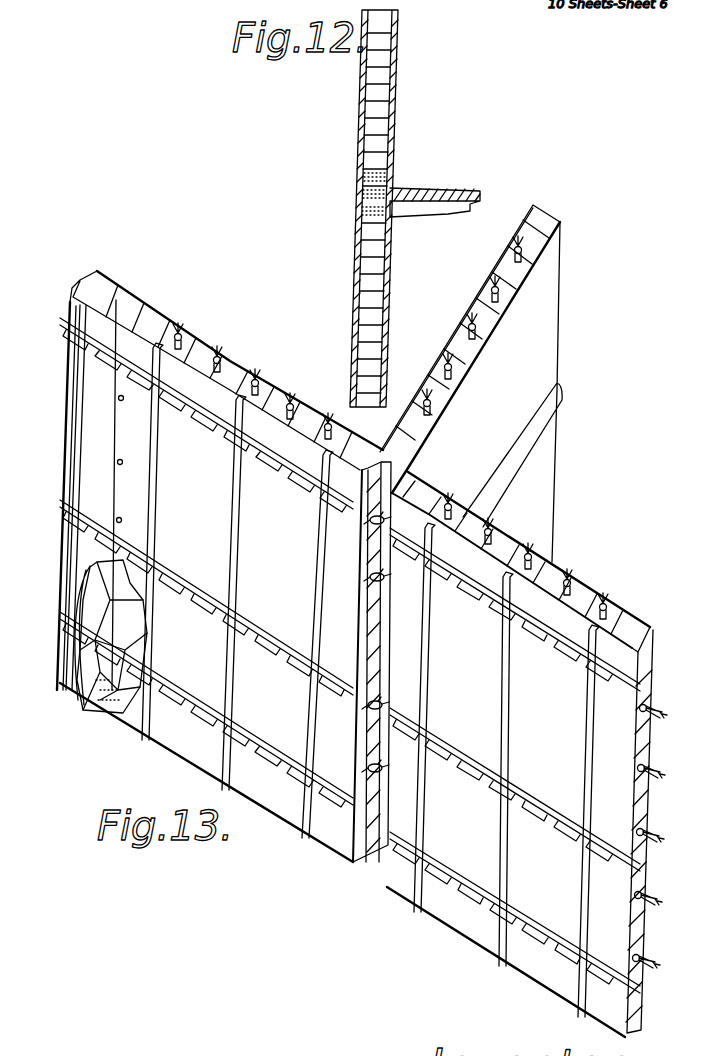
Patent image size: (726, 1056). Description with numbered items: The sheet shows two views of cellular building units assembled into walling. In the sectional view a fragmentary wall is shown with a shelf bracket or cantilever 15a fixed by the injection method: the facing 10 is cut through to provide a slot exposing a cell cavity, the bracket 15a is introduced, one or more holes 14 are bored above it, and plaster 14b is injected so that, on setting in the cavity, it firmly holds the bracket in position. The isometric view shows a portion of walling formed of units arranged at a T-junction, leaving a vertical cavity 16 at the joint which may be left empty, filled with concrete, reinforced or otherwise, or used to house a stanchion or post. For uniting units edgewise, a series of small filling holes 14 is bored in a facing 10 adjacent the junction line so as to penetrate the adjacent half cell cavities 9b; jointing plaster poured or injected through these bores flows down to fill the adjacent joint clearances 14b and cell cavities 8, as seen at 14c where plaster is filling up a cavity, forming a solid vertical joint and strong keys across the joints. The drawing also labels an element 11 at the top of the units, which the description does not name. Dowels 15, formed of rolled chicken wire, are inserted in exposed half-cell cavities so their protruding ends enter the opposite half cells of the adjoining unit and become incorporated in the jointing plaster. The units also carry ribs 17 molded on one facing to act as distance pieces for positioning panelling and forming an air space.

In FIG. 13, the cell cavity 8 is at (125, 617).
In FIG. 13, the half cell cavity 9b is at (95, 576).
In FIG. 12, the facing 10 is at (393, 121).
In FIG. 13, the facing 10 is at (652, 657).
In FIG. 12, the top channel rail 11 is at (361, 110).
In FIG. 13, the top channel rail 11 is at (636, 620).
In FIG. 12, the filling holes 14 is at (394, 183).
In FIG. 13, the filling holes 14 is at (117, 462).
In FIG. 13, the joint clearances 14b is at (112, 700).
In FIG. 12, the plaster filling 14c is at (366, 191).
In FIG. 13, the dowels 15 is at (540, 590).
In FIG. 12, the bracket 15a is at (470, 200).
In FIG. 13, the vertical cavity 16 is at (360, 528).
In FIG. 13, the ribs 17 is at (159, 471).